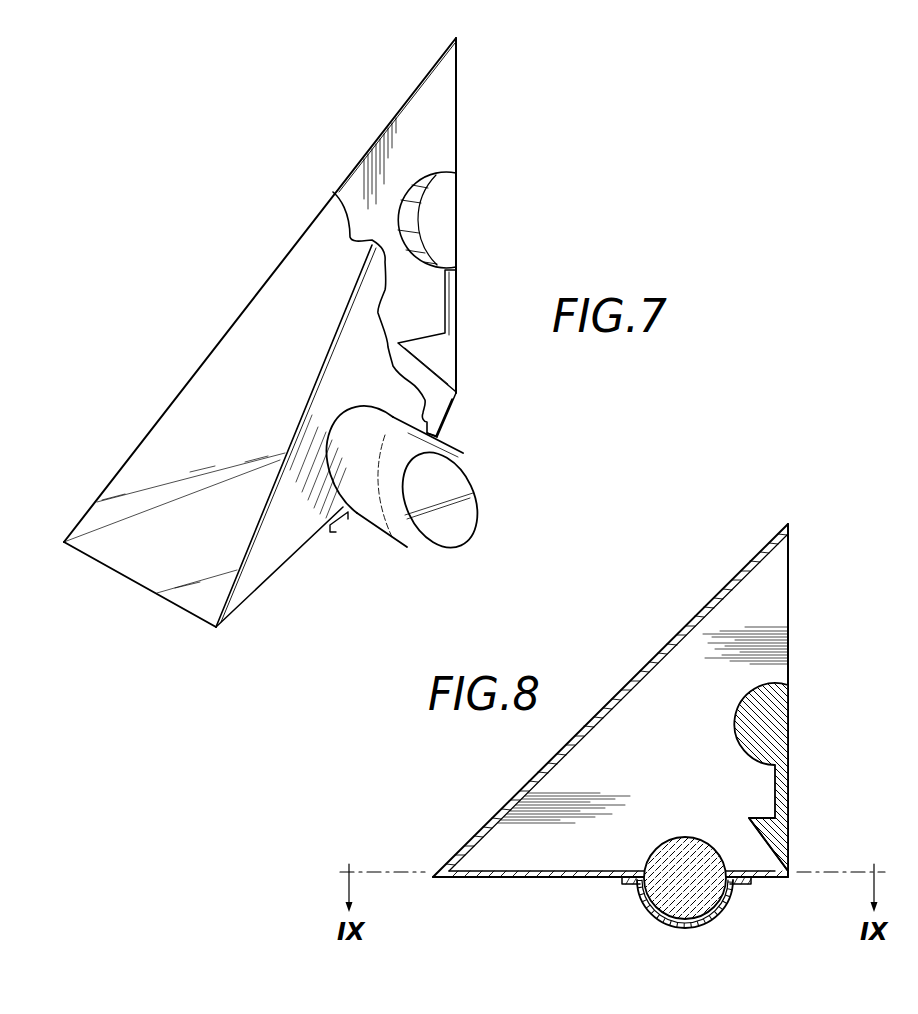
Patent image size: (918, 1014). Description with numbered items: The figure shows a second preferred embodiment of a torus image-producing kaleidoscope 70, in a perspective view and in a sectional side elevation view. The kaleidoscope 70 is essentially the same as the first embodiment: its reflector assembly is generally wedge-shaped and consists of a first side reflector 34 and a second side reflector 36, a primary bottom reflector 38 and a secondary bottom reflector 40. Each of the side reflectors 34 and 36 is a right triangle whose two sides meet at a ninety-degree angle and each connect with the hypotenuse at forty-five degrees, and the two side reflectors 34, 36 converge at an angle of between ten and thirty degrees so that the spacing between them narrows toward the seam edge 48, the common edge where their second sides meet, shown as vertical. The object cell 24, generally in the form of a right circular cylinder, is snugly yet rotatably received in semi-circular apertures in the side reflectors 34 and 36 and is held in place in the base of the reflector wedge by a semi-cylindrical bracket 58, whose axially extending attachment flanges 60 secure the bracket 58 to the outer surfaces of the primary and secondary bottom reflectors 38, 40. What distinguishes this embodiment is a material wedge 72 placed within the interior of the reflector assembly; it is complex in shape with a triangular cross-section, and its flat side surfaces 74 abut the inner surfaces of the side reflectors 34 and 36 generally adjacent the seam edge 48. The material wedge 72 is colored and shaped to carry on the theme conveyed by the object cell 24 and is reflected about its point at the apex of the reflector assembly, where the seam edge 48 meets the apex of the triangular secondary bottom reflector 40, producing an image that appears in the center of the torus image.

In FIG. 7, the object cell 24 is at (486, 520).
In FIG. 8, the object cell 24 is at (688, 828).
In FIG. 7, the first side reflector 34 is at (267, 560).
In FIG. 7, the second side reflector 36 is at (124, 460).
In FIG. 8, the second side reflector 36 is at (610, 700).
In FIG. 7, the primary bottom reflector 38 is at (124, 580).
In FIG. 8, the primary bottom reflector 38 is at (513, 880).
In FIG. 7, the secondary bottom reflector 40 is at (456, 393).
In FIG. 8, the secondary bottom reflector 40 is at (775, 880).
In FIG. 8, the seam edge 48 is at (788, 770).
In FIG. 7, the semi-cylindrical bracket 58 is at (353, 517).
In FIG. 8, the semi-cylindrical bracket 58 is at (700, 925).
In FIG. 8, the attachment flanges 60 is at (624, 886).
In FIG. 7, the torus image-producing kaleidoscope 70 is at (506, 121).
In FIG. 8, the torus image-producing kaleidoscope 70 is at (780, 711).
In FIG. 7, the material wedge 72 is at (392, 218).
In FIG. 7, the flat side surfaces 74 is at (442, 215).